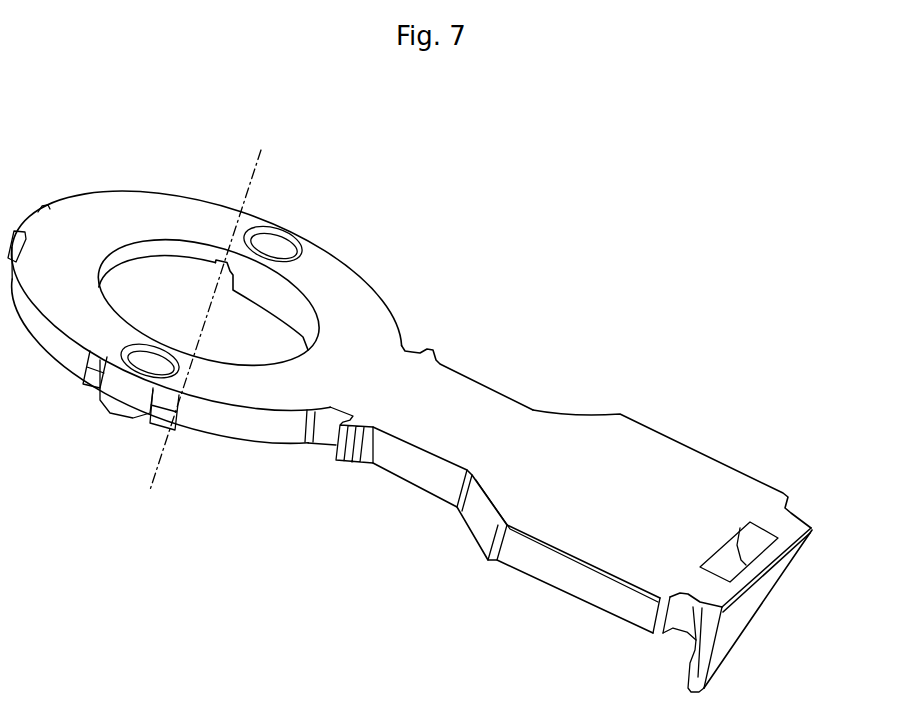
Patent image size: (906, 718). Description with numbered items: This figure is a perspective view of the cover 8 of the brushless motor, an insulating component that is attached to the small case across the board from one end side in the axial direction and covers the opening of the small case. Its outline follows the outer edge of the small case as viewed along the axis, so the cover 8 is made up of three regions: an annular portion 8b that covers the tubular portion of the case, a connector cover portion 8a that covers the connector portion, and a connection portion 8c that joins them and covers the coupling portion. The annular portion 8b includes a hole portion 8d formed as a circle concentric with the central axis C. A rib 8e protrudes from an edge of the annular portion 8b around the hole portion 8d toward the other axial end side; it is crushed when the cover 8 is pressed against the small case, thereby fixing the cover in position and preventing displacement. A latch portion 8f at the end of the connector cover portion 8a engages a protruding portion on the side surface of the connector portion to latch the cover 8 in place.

The cover 8 is at (751, 275).
The connector cover portion 8a is at (685, 464).
The annular portion 8b is at (94, 219).
The connection portion 8c is at (463, 394).
The hole portion 8d is at (300, 307).
The rib 8e is at (121, 414).
The latch portion 8f is at (687, 685).
The central axis C is at (211, 307).